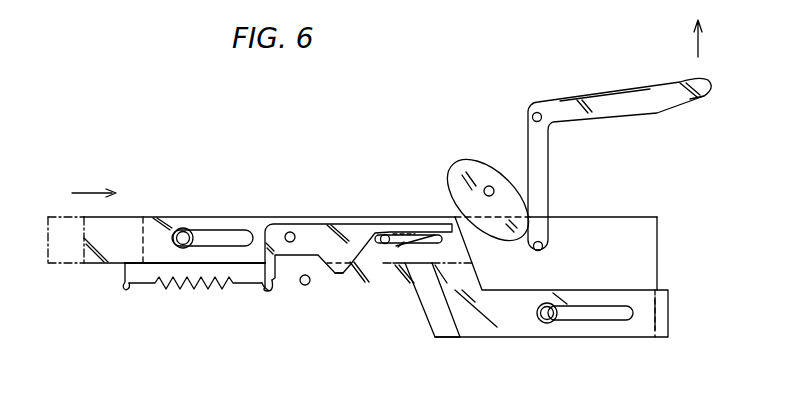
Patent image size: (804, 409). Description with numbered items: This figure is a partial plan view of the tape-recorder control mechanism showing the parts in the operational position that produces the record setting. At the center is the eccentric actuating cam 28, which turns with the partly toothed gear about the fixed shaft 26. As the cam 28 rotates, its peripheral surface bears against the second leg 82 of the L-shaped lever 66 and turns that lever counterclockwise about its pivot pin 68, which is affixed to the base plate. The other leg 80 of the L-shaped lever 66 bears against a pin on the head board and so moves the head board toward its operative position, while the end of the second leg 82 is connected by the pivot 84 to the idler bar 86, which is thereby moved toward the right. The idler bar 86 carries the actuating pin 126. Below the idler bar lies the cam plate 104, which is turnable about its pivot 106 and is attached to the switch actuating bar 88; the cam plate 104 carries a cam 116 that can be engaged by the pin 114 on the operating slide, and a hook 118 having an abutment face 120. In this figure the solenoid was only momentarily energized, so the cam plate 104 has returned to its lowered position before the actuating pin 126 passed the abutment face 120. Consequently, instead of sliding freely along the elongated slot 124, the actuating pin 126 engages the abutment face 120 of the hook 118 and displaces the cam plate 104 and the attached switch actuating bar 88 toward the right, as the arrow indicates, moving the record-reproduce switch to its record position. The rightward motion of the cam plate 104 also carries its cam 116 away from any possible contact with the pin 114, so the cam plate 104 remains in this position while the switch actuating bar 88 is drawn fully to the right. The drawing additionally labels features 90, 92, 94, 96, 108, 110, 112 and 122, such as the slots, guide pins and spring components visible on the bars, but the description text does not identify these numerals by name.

The shaft 26 is at (489, 186).
The eccentric actuating cam 28 is at (505, 228).
The L-shaped lever 66 is at (596, 100).
The pivot pin 68 is at (533, 113).
The leg 80 is at (676, 108).
The second leg 82 is at (552, 183).
The pivot 84 is at (548, 246).
The idler bar 86 is at (657, 262).
The switch actuating bar 88 is at (668, 310).
The guide slot 90 is at (219, 240).
The guide slot 92 is at (612, 322).
The guide pin 94 is at (183, 228).
The guide pin 96 is at (549, 324).
The cam plate 104 is at (347, 230).
The pivot 106 is at (292, 232).
The return spring 108 is at (196, 287).
The spring anchor hook 110 is at (266, 290).
The spring anchor post 112 is at (127, 292).
The pin 114 is at (305, 285).
The cam 116 is at (336, 272).
The hook 118 is at (397, 248).
The abutment face 120 is at (398, 244).
The latch slot plate 122 is at (412, 232).
The elongated slot 124 is at (428, 248).
The actuating pin 126 is at (383, 244).